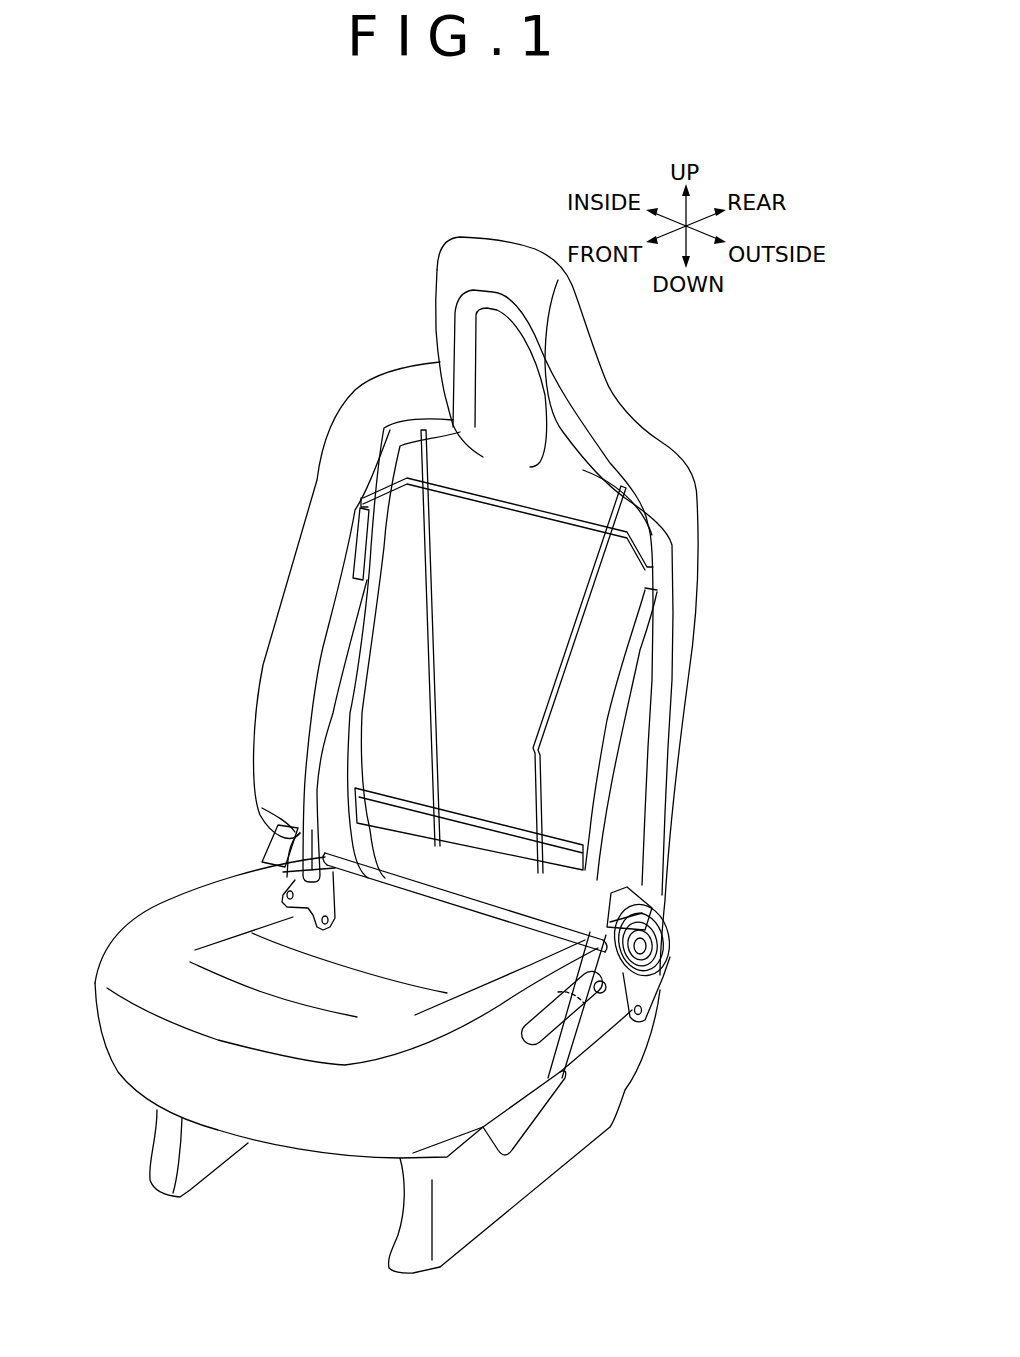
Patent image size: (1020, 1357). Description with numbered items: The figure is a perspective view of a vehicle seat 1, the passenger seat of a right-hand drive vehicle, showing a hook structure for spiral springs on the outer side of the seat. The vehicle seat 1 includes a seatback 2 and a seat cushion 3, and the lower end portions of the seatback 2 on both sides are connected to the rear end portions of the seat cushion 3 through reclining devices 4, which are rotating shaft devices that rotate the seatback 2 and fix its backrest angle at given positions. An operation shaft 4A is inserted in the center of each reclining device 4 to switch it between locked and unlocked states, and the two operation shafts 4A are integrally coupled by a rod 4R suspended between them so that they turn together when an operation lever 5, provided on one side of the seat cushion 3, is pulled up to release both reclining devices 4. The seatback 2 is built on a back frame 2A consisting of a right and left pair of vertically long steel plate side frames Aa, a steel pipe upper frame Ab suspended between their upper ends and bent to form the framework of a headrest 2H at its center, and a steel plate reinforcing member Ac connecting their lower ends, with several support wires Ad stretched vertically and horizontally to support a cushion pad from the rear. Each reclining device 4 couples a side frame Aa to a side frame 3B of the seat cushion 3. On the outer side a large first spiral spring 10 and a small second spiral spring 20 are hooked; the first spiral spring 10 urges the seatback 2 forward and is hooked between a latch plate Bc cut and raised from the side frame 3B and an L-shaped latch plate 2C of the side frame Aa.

The vehicle seat 1 is at (205, 370).
The seatback 2 is at (335, 437).
The headrest 2H is at (490, 340).
The back frame 2A is at (643, 497).
The L-shaped latch plate 2C is at (303, 832).
The upper frame Ab is at (557, 400).
The side frame Aa is at (340, 748).
The reinforcing member Ac is at (472, 830).
The support wire Ad is at (487, 500).
The seat cushion 3 is at (180, 900).
The side frame of the seat cushion 3B is at (317, 895).
The reclining device 4 is at (290, 860).
The operation shaft 4A is at (352, 858).
The rod 4R is at (440, 890).
The first spiral spring 10 is at (283, 872).
The second spiral spring 20 is at (672, 923).
The latch plate Bc is at (662, 945).
The operation lever 5 is at (590, 1025).